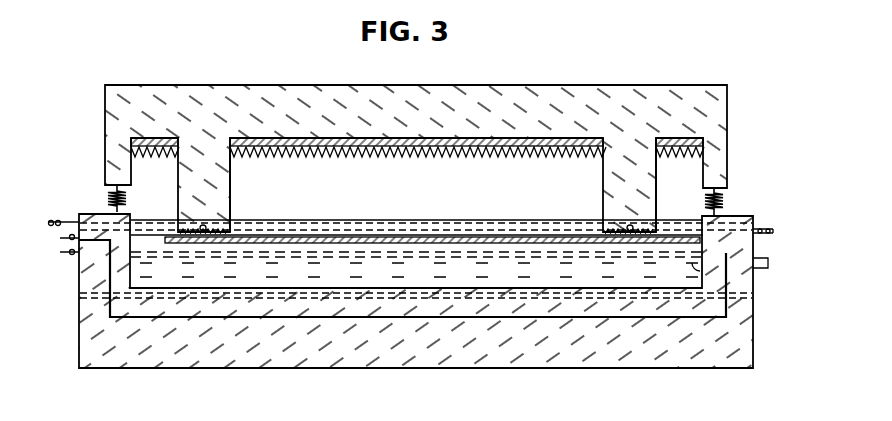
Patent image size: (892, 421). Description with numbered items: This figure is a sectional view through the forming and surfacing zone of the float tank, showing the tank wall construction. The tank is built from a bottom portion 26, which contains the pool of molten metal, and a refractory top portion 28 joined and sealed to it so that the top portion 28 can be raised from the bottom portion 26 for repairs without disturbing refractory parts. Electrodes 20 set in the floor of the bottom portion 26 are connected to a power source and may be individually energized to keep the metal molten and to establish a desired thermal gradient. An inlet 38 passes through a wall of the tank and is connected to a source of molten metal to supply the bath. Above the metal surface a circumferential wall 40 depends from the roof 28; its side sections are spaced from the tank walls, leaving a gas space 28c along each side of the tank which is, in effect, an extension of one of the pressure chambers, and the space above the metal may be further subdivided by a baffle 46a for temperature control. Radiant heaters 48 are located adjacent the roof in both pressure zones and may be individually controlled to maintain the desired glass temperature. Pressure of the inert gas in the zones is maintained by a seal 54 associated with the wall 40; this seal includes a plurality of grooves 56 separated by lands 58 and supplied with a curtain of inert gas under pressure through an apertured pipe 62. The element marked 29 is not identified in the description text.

The electrodes 20 is at (372, 318).
The bottom portion 26 is at (79, 342).
The refractory top portion 28 is at (105, 122).
The gas space 28c is at (135, 160).
The spring contact 29 is at (108, 198).
The inlet 38 is at (768, 263).
The circumferential wall 40 is at (230, 181).
The baffle 46a is at (424, 201).
The radiant heaters 48 is at (657, 163).
The seal 54 is at (177, 228).
The grooves 56 is at (190, 227).
The lands 58 is at (245, 237).
The apertured pipe 62 is at (65, 222).